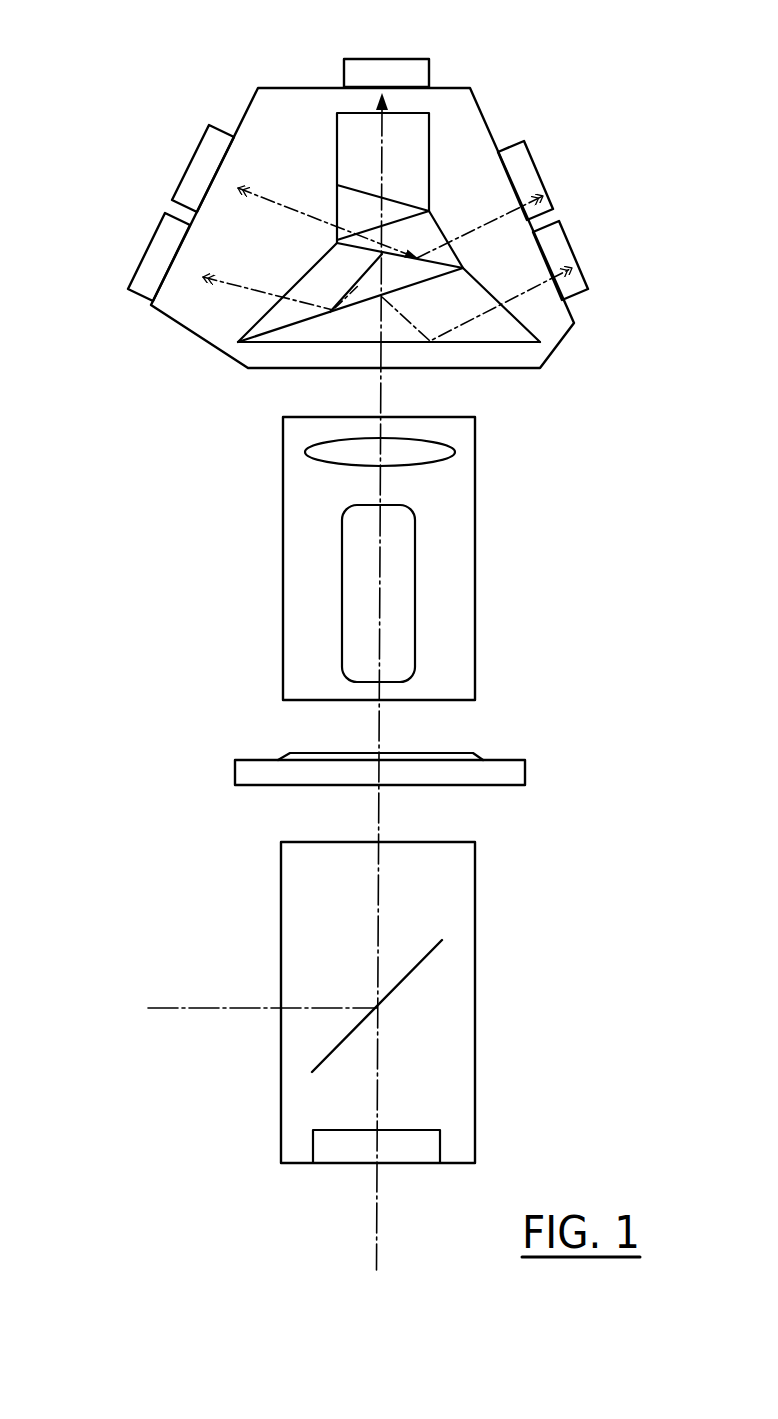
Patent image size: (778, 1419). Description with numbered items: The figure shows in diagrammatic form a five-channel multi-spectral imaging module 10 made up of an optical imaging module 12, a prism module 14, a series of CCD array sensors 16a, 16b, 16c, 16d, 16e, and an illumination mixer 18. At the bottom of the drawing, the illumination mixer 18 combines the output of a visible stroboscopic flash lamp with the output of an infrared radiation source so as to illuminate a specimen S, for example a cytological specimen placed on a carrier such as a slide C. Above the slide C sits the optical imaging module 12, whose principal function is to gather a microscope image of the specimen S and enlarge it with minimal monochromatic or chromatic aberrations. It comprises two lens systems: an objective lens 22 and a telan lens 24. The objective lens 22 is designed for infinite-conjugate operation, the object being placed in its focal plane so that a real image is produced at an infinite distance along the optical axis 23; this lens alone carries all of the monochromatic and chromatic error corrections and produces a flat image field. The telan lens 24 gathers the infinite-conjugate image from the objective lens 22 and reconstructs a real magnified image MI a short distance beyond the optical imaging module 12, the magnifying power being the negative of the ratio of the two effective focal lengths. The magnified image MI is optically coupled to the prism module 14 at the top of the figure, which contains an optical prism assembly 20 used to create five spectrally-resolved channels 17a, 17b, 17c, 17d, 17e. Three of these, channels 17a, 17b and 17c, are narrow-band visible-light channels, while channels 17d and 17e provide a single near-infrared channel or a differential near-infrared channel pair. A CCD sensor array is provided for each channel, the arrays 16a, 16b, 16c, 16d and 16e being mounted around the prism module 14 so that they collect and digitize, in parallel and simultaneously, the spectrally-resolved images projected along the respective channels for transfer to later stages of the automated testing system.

The multi-spectral imaging module 10 is at (575, 49).
The optical imaging module 12 is at (476, 556).
The prism module 14 is at (213, 357).
The CCD sensor array 16a is at (589, 247).
The CCD sensor array 16b is at (547, 153).
The CCD sensor array 16c is at (418, 48).
The CCD sensor array 16d is at (192, 146).
The CCD sensor array 16e is at (133, 244).
The visible-light channel 17a is at (512, 297).
The visible-light channel 17b is at (477, 227).
The visible-light channel 17c is at (384, 147).
The NIR channel 17d is at (292, 207).
The NIR channel 17e is at (238, 283).
The illumination mixer 18 is at (476, 922).
The optical prism assembly 20 is at (300, 344).
The objective lens 22 is at (342, 606).
The optical axis 23 is at (381, 502).
The telan lens 24 is at (340, 467).
The specimen S is at (440, 753).
The slide C is at (526, 771).
The magnified image MI is at (384, 388).